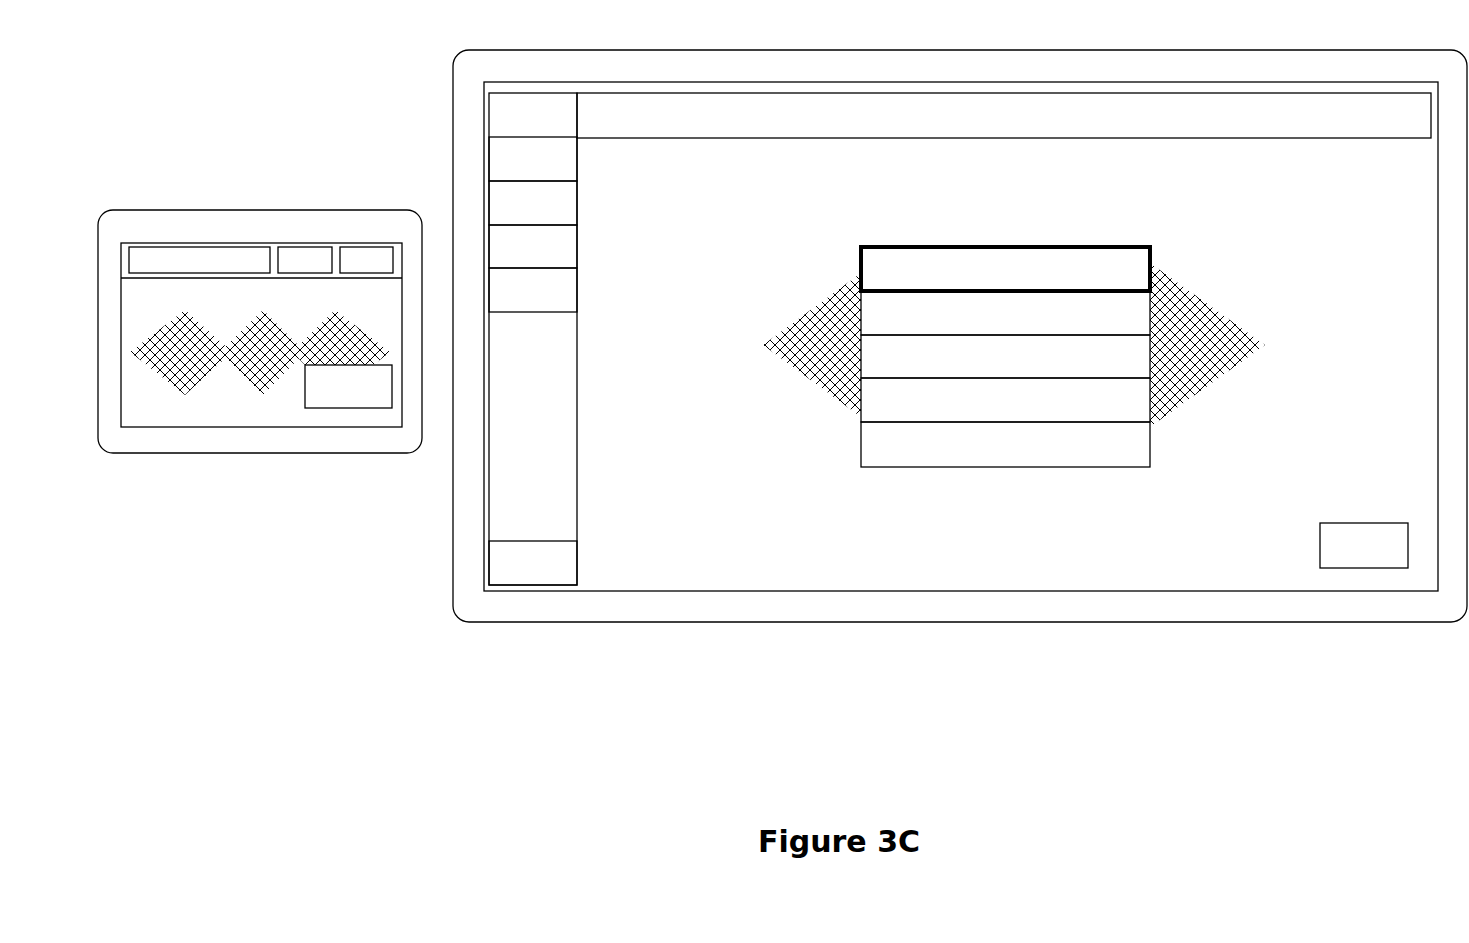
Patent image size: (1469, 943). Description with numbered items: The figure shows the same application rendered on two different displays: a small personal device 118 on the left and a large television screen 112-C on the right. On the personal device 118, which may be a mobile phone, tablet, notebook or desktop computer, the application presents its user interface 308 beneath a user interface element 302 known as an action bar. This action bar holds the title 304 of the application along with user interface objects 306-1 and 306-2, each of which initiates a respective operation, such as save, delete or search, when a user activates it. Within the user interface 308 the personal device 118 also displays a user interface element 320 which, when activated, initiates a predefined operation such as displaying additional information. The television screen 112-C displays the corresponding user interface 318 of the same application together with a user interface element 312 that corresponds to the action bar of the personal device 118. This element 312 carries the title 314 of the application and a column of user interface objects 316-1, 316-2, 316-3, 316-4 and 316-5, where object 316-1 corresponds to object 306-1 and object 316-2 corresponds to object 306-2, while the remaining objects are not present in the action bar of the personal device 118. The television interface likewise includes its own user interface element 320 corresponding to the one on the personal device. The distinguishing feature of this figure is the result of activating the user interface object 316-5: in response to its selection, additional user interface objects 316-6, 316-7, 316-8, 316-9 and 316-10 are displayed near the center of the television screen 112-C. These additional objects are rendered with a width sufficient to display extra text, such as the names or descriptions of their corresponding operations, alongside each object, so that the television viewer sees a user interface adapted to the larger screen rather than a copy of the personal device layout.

The personal device 118 is at (347, 453).
The user interface element 302 is at (145, 243).
The title 304 is at (232, 247).
The user interface object 306-1 is at (300, 247).
The user interface object 306-2 is at (373, 247).
The user interface 308 is at (260, 427).
The television screen 112-C is at (1333, 622).
The user interface element 312 is at (533, 93).
The title 314 is at (955, 126).
The user interface object 316-1 is at (503, 171).
The user interface object 316-2 is at (503, 214).
The user interface object 316-3 is at (503, 258).
The user interface object 316-4 is at (503, 303).
The user interface object 316-5 is at (503, 573).
The additional user interface object 316-6 is at (937, 279).
The additional user interface object 316-7 is at (937, 323).
The additional user interface object 316-8 is at (937, 366).
The additional user interface object 316-9 is at (937, 410).
The additional user interface object 316-10 is at (923, 454).
The user interface 318 is at (1085, 591).
The user interface element 320 is at (328, 398).